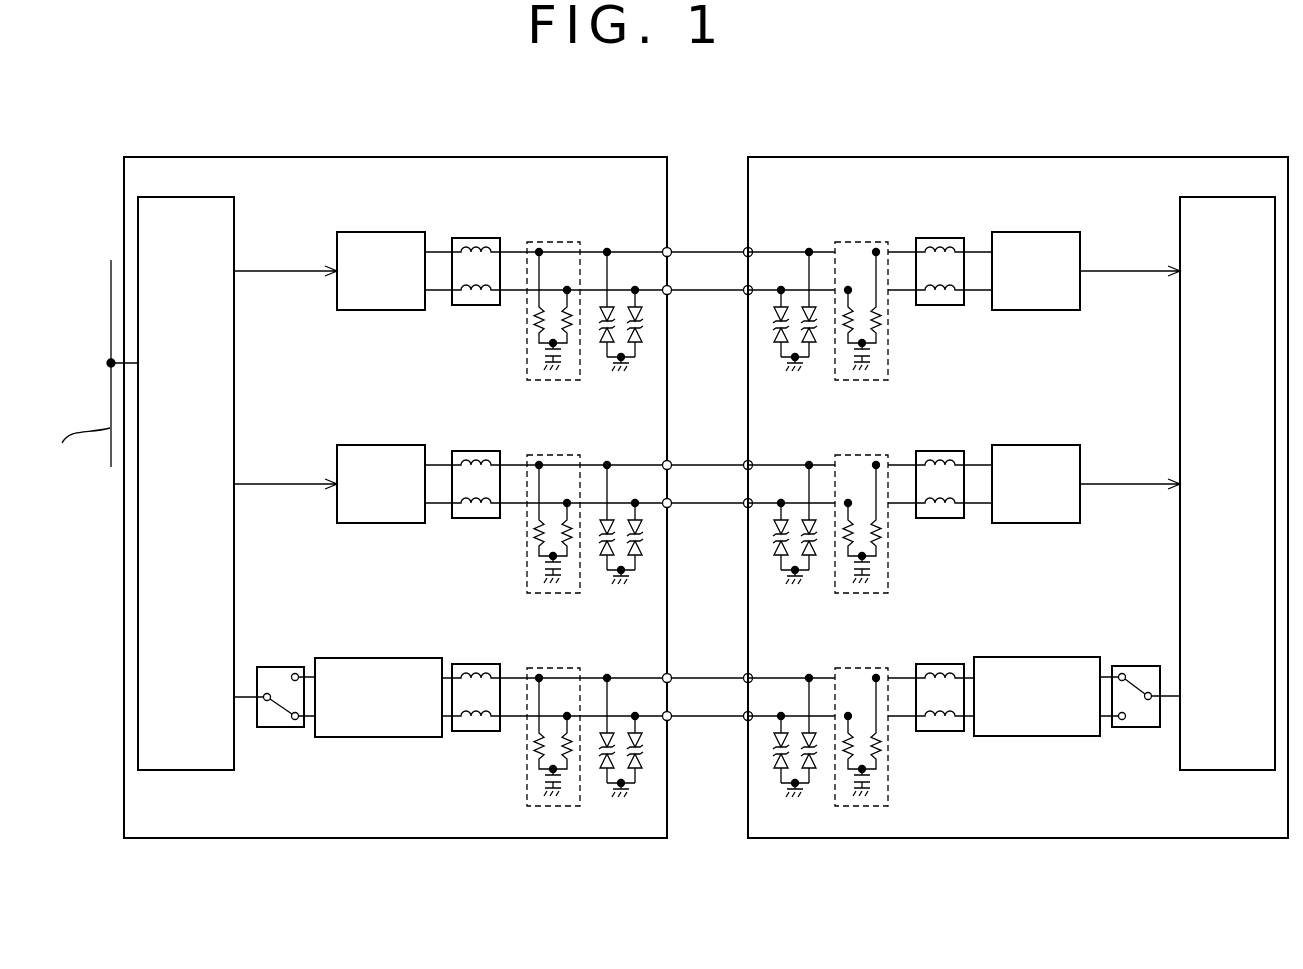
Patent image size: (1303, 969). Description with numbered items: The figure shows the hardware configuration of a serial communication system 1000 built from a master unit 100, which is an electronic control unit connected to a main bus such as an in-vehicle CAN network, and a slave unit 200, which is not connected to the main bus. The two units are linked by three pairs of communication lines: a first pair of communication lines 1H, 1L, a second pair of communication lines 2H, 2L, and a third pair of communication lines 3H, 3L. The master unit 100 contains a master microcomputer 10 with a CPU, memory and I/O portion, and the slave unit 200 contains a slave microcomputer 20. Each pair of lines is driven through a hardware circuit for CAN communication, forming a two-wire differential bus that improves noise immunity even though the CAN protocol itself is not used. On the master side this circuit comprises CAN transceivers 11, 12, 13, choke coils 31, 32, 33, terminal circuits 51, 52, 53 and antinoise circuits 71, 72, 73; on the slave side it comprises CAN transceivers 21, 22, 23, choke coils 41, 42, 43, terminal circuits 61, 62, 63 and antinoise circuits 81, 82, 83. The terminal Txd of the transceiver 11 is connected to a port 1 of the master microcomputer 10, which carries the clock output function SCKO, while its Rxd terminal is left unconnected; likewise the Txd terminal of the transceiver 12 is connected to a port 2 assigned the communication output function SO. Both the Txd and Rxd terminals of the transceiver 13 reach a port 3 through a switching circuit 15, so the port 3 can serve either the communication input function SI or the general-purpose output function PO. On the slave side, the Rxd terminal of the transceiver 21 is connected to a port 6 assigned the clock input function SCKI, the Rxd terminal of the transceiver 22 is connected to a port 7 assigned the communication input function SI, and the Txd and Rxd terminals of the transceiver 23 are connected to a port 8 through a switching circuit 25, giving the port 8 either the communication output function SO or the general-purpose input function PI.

The serial communication system 1000 is at (132, 127).
The master unit 100 is at (402, 157).
The slave unit 200 is at (1021, 157).
The master microcomputer 10 is at (190, 197).
The slave microcomputer 20 is at (1231, 197).
The port 1 is at (237, 270).
The port 2 is at (237, 483).
The port 3 is at (237, 697).
The port 6 is at (1178, 270).
The port 7 is at (1178, 483).
The port 8 is at (1178, 696).
The CAN transceiver 11 is at (383, 232).
The CAN transceiver 12 is at (383, 445).
The CAN transceiver 13 is at (383, 657).
The switching circuit 15 is at (285, 667).
The CAN transceiver 21 is at (1037, 232).
The CAN transceiver 22 is at (1037, 444).
The CAN transceiver 23 is at (1035, 656).
The switching circuit 25 is at (1130, 666).
The choke coil 31 is at (478, 238).
The choke coil 32 is at (478, 451).
The choke coil 33 is at (478, 663).
The choke coil 41 is at (940, 305).
The choke coil 42 is at (940, 518).
The choke coil 43 is at (940, 731).
The terminal circuit 51 is at (548, 242).
The terminal circuit 52 is at (541, 455).
The terminal circuit 53 is at (541, 668).
The terminal circuit 61 is at (858, 242).
The terminal circuit 62 is at (851, 455).
The terminal circuit 63 is at (851, 668).
The antinoise circuit 71 is at (652, 352).
The antinoise circuit 72 is at (652, 565).
The antinoise circuit 73 is at (652, 780).
The antinoise circuit 81 is at (771, 354).
The antinoise circuit 82 is at (771, 567).
The antinoise circuit 83 is at (771, 780).
The communication line 1H is at (706, 250).
The communication line 1L is at (706, 295).
The communication line 2H is at (706, 463).
The communication line 2L is at (706, 508).
The communication line 3H is at (706, 676).
The communication line 3L is at (706, 721).